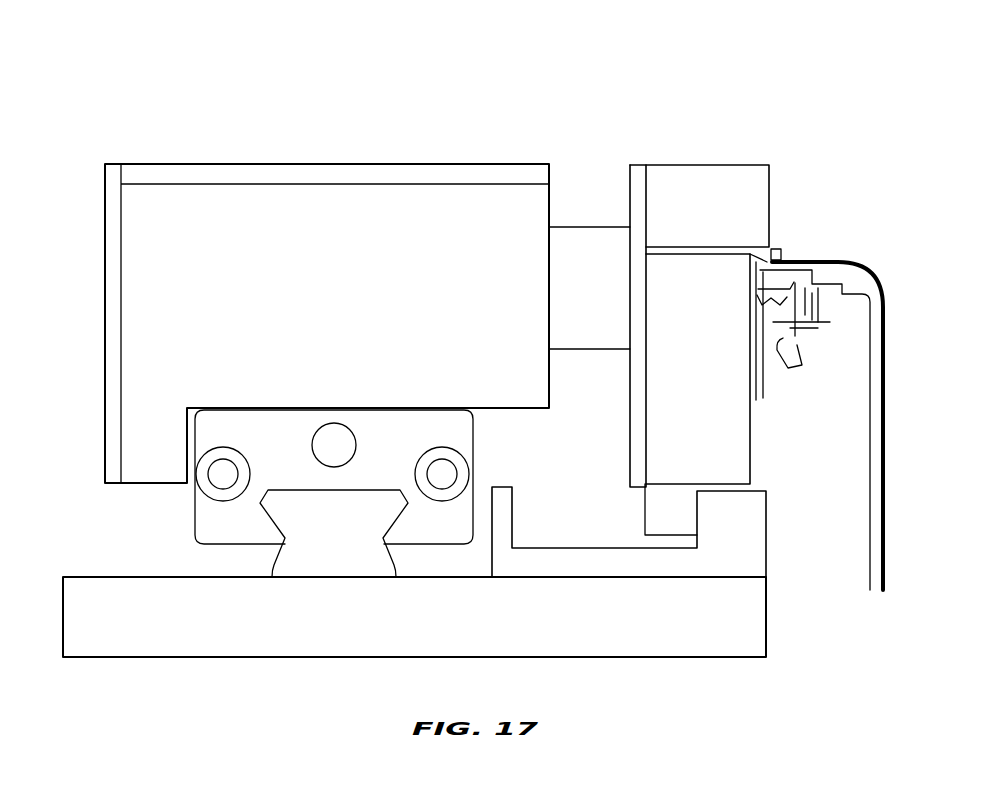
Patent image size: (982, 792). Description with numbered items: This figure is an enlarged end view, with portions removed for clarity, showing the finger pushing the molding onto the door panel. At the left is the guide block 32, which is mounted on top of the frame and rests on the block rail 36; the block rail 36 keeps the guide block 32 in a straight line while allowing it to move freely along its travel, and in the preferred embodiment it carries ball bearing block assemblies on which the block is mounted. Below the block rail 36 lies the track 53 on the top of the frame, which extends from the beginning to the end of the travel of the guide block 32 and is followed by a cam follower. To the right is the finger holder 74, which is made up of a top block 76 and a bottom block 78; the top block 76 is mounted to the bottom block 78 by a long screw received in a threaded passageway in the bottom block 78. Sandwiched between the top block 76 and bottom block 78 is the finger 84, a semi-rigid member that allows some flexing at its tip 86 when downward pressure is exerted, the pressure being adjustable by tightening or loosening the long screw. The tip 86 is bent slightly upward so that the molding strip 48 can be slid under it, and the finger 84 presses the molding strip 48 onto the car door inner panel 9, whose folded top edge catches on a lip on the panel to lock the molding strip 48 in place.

The car door inner panel 9 is at (880, 340).
The guide block 32 is at (346, 151).
The block rail 36 is at (318, 562).
The molding strip 48 is at (797, 345).
The track 53 is at (747, 560).
The finger holder 74 is at (716, 313).
The top block 76 is at (760, 181).
The bottom block 78 is at (738, 453).
The finger 84 is at (676, 248).
The tip 86 is at (786, 252).